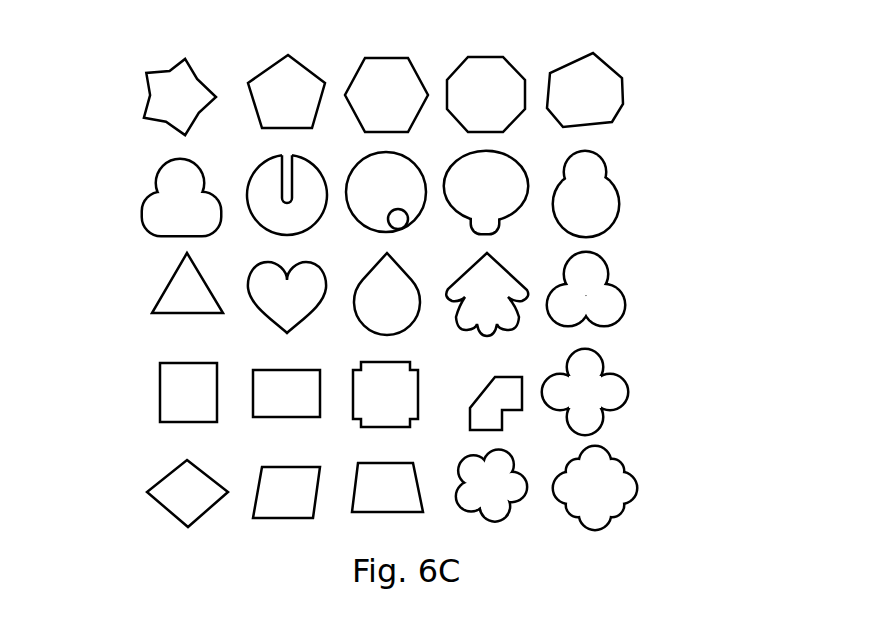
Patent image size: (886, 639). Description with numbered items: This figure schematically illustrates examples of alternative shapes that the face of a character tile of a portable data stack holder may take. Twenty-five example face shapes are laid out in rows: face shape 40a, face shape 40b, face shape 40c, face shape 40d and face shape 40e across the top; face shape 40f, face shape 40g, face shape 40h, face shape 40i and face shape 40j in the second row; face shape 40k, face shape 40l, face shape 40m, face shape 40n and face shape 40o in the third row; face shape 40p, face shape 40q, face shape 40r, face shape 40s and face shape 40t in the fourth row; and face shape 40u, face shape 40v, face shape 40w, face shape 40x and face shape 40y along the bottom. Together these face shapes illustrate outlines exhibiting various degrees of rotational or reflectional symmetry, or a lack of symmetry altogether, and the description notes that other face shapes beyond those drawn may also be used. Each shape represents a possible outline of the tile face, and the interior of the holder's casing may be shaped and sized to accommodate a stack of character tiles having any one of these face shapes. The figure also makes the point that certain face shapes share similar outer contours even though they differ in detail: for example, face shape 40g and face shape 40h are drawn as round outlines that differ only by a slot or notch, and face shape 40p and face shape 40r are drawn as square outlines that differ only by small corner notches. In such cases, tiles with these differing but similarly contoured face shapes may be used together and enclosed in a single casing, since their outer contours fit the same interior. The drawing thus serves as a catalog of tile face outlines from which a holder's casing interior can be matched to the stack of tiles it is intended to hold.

The face shape 40a is at (162, 72).
The face shape 40b is at (272, 67).
The face shape 40c is at (362, 62).
The face shape 40d is at (462, 65).
The face shape 40e is at (587, 65).
The face shape 40f is at (152, 157).
The face shape 40g is at (262, 165).
The face shape 40h is at (365, 163).
The face shape 40i is at (468, 162).
The face shape 40j is at (608, 193).
The face shape 40k is at (167, 288).
The face shape 40l is at (262, 267).
The face shape 40m is at (375, 272).
The face shape 40n is at (468, 270).
The face shape 40o is at (607, 273).
The face shape 40p is at (158, 385).
The face shape 40q is at (283, 370).
The face shape 40r is at (377, 363).
The face shape 40s is at (492, 390).
The face shape 40t is at (603, 368).
The face shape 40u is at (170, 475).
The face shape 40v is at (288, 467).
The face shape 40w is at (378, 463).
The face shape 40x is at (508, 452).
The face shape 40y is at (615, 467).